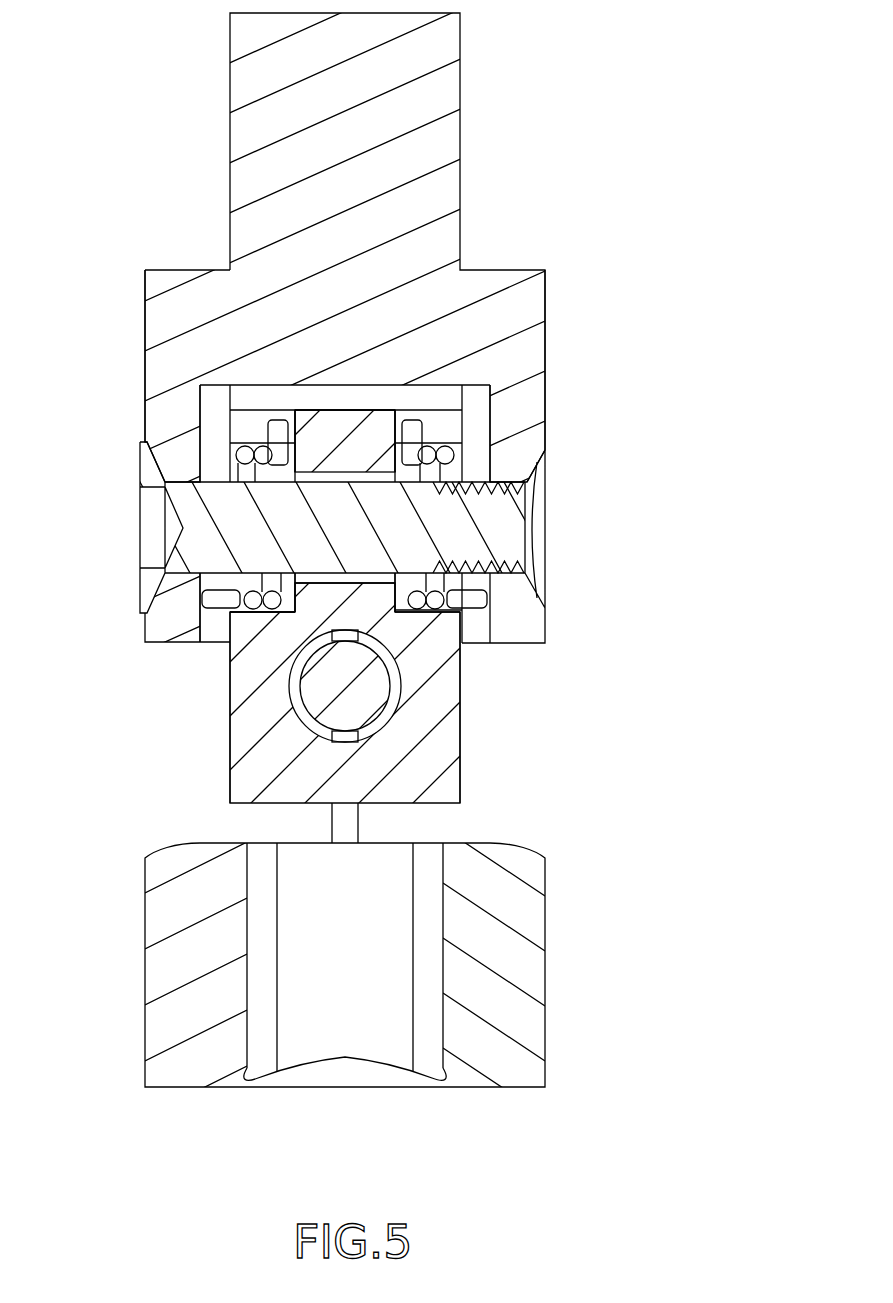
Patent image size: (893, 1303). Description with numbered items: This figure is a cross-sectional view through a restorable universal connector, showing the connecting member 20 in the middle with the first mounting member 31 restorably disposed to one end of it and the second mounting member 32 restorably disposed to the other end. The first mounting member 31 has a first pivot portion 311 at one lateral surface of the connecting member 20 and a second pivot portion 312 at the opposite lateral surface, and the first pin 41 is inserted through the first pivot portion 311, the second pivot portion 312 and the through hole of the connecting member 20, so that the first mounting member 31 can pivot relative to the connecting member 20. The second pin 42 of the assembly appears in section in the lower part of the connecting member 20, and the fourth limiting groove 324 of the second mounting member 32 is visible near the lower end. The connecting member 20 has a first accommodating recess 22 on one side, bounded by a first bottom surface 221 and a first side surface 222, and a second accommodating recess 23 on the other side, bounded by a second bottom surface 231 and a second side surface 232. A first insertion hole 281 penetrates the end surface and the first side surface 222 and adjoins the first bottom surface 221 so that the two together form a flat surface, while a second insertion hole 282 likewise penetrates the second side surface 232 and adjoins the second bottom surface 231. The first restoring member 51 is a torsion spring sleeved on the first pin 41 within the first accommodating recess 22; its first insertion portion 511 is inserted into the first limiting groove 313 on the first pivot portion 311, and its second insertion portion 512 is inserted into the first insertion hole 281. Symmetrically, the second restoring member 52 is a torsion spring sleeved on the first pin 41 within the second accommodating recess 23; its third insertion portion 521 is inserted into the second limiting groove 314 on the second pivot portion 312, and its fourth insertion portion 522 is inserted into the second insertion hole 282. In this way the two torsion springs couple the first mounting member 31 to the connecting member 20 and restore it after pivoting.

The connecting member 20 is at (462, 752).
The first accommodating recess 22 is at (287, 612).
The second accommodating recess 23 is at (405, 612).
The first mounting member 31 is at (462, 85).
The second mounting member 32 is at (146, 1043).
The first pin 41 is at (148, 469).
The second pin 42 is at (318, 705).
The first restoring member 51 is at (229, 453).
The second restoring member 52 is at (462, 453).
The first bottom surface 221 is at (300, 470).
The first side surface 222 is at (290, 590).
The second bottom surface 231 is at (402, 486).
The second side surface 232 is at (402, 580).
The first insertion hole 281 is at (290, 413).
The second insertion hole 282 is at (400, 413).
The first pivot portion 311 is at (165, 367).
The second pivot portion 312 is at (523, 365).
The first limiting groove 313 is at (215, 645).
The second limiting groove 314 is at (478, 628).
The fourth limiting groove 324 is at (338, 823).
The first insertion portion 511 is at (205, 600).
The second insertion portion 512 is at (270, 425).
The third insertion portion 521 is at (486, 600).
The fourth insertion portion 522 is at (420, 425).